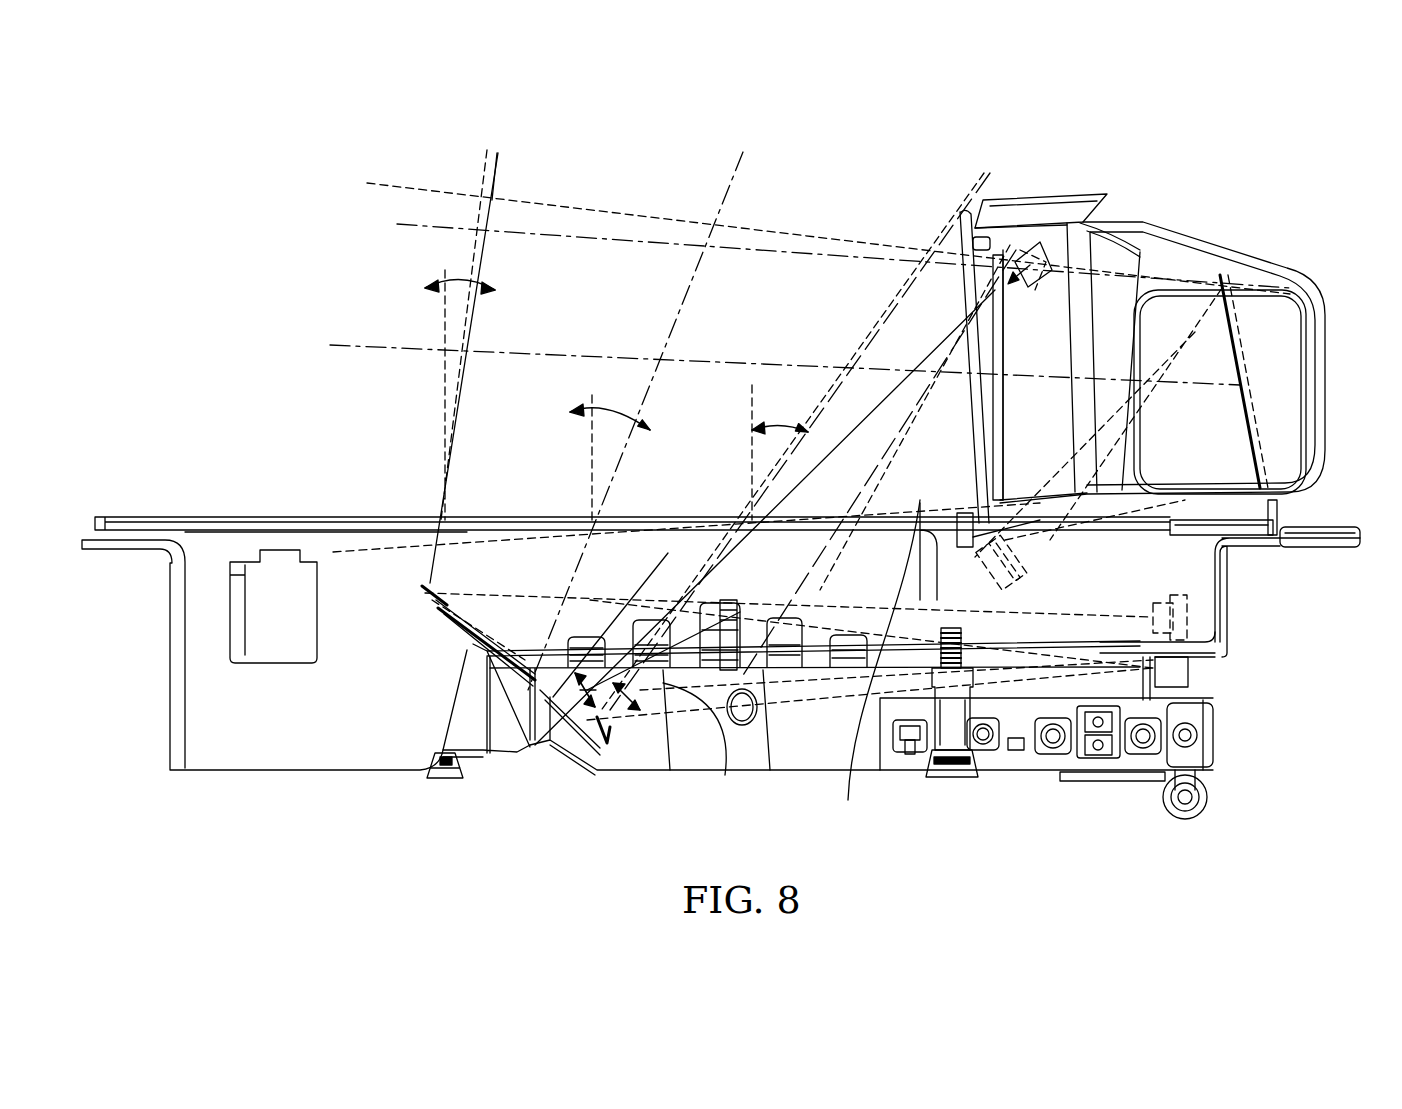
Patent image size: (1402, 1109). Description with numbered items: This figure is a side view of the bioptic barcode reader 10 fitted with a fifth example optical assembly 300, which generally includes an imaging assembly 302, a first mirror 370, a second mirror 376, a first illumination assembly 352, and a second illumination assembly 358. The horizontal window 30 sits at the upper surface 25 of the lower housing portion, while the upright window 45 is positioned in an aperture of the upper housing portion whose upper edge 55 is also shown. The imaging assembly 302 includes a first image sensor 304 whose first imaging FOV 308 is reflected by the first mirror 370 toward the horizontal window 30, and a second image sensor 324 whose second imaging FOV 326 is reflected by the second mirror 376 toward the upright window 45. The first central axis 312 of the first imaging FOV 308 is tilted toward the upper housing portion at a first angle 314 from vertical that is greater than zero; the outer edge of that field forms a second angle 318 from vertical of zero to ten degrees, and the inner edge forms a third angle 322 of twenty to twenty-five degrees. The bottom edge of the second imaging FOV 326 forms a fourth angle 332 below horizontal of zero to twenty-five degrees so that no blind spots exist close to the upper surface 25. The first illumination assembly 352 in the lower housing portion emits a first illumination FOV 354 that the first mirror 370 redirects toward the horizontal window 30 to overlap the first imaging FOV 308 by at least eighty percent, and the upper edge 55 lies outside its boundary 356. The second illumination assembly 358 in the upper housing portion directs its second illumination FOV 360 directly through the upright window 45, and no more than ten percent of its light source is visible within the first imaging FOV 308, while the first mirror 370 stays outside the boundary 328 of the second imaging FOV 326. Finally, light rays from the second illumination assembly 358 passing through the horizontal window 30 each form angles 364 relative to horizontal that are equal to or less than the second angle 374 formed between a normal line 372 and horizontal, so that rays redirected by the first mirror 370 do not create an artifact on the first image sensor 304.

The bioptic barcode reader 10 is at (1145, 122).
The upper surface 25 is at (255, 517).
The horizontal window 30 is at (510, 525).
The upright window 45 is at (1005, 345).
The upper edge 55 is at (962, 222).
The fifth example optical assembly 300 is at (1185, 556).
The imaging assembly 302 is at (1175, 585).
The first image sensor 304 is at (1168, 625).
The first imaging FOV 308 is at (835, 610).
The first central axis 312 is at (728, 187).
The first angle 314 is at (612, 405).
The second angle 318 is at (442, 285).
The third angle 322 is at (790, 428).
The second image sensor 324 is at (1010, 567).
The second imaging FOV 326 is at (1035, 510).
The boundary of second imaging FOV 328 is at (586, 207).
The fourth angle 332 is at (1037, 483).
The first illumination assembly 352 is at (1188, 677).
The first illumination FOV 354 is at (1053, 683).
The boundary of first illumination FOV 356 is at (490, 255).
The second illumination assembly 358 is at (1103, 221).
The second illumination FOV 360 is at (772, 250).
The angles 364 is at (703, 672).
The first mirror 370 is at (445, 614).
The normal line 372 is at (582, 718).
The second angle 374 is at (580, 690).
The second mirror 376 is at (1240, 352).